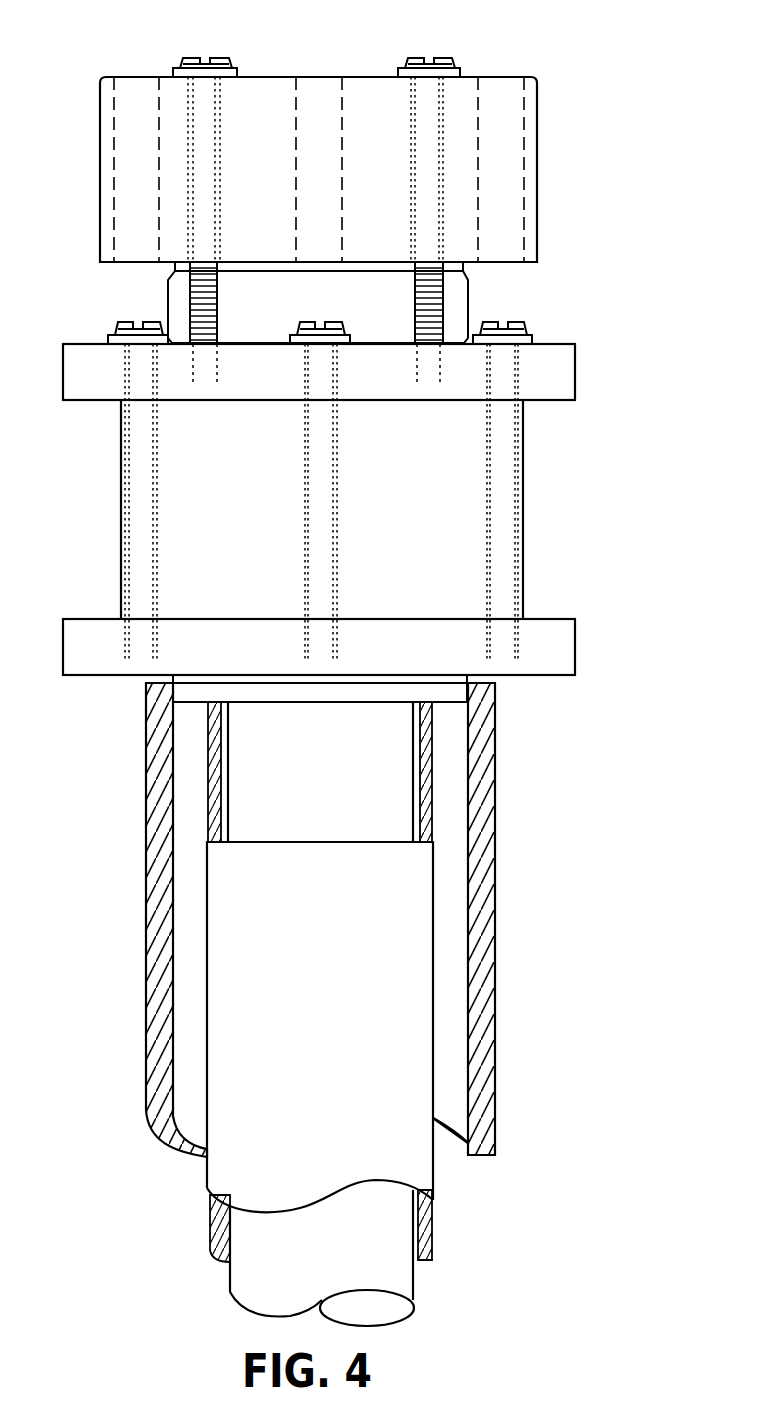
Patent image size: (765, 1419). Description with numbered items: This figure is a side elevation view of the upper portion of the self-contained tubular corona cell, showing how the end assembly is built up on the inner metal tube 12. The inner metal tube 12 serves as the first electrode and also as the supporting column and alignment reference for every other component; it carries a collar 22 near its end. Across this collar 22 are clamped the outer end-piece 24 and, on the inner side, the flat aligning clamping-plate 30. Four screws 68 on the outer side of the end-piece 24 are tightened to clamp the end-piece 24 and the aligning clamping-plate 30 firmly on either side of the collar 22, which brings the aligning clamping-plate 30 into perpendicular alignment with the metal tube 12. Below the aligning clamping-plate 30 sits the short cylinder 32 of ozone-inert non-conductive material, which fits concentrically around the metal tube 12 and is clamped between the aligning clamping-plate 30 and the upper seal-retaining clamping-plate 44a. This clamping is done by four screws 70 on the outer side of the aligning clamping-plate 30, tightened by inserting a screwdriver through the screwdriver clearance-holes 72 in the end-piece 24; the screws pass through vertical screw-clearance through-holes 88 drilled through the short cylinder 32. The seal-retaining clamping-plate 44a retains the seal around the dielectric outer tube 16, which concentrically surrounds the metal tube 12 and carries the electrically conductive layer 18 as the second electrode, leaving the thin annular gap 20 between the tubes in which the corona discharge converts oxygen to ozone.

The inner metal tube 12 is at (412, 742).
The outer tube 16 is at (428, 798).
The electrically conductive layer 18 is at (433, 973).
The annular gap 20 is at (228, 777).
The collar 22 is at (470, 295).
The end-piece 24 is at (537, 152).
The aligning clamping-plate 30 is at (575, 360).
The short cylinder 32 is at (523, 510).
The upper seal-retaining clamping-plate 44a is at (576, 638).
The screws 68 is at (197, 55).
The screws 70 is at (128, 322).
The screwdriver clearance-holes 72 is at (122, 152).
The screw-clearance through-holes 88 is at (120, 503).